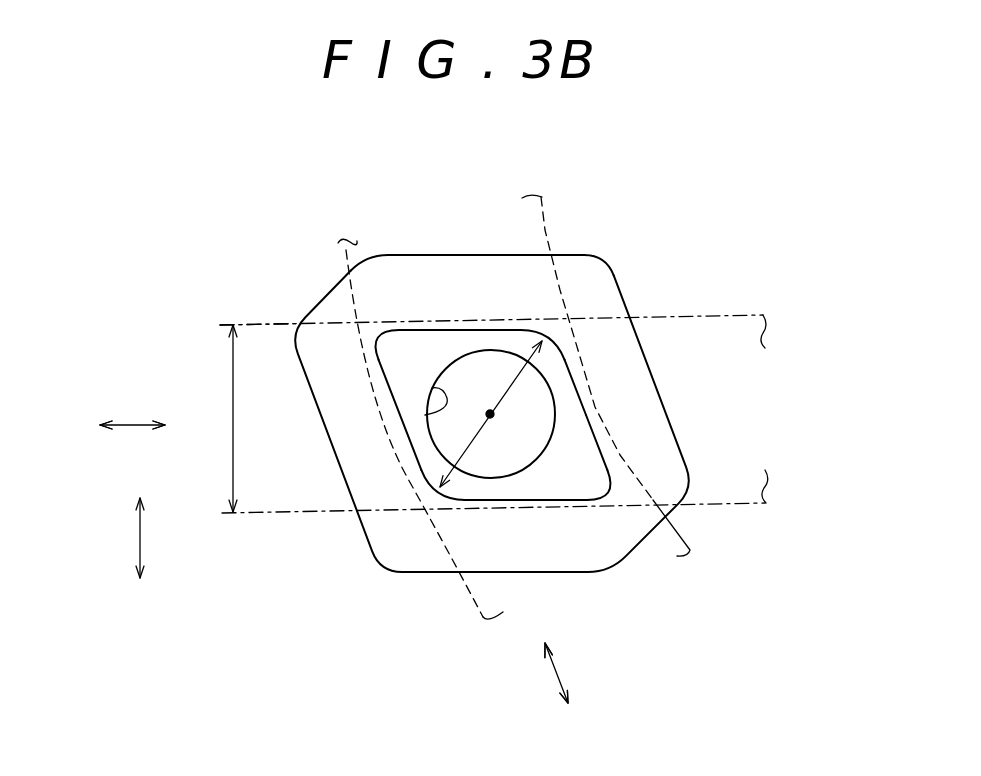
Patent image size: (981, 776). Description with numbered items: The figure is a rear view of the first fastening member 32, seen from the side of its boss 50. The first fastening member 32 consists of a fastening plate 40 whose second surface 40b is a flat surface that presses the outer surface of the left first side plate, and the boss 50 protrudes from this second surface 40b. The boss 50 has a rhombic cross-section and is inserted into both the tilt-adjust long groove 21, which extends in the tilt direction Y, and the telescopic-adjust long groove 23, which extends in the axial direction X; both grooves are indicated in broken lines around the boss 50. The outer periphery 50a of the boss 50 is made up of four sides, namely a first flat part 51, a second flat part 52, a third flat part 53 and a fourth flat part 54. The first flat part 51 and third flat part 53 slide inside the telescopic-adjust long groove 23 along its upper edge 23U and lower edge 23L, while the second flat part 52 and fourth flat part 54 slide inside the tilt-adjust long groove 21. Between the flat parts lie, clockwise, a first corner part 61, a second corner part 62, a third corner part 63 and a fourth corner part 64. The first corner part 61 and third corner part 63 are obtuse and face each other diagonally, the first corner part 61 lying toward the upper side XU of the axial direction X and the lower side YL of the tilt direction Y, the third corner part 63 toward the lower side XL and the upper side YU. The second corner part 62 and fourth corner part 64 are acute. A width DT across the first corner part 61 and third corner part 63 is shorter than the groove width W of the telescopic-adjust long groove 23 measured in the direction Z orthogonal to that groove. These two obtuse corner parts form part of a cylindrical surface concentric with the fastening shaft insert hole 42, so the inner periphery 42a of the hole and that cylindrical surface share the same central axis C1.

The tilt-adjust long groove 21 is at (541, 222).
The first fastening member 32 is at (563, 217).
The fastening plate 40 is at (492, 379).
The second surface 40b is at (597, 258).
The telescopic-adjust long groove 23 is at (270, 330).
The upper edge of the telescopic-adjust long groove 23U is at (730, 316).
The lower edge of the telescopic-adjust long groove 23L is at (728, 492).
The fastening shaft insert hole 42 is at (471, 356).
The inner periphery 42a is at (425, 415).
The boss 50 is at (515, 417).
The outer periphery 50a is at (597, 436).
The first flat part 51 is at (487, 499).
The second flat part 52 is at (408, 440).
The third flat part 53 is at (481, 327).
The fourth flat part 54 is at (575, 382).
The first corner part 61 is at (430, 483).
The second corner part 62 is at (383, 345).
The third corner part 63 is at (560, 348).
The fourth corner part 64 is at (592, 483).
The central axis C1 is at (490, 415).
The width across the first and third corner parts DT is at (500, 400).
The groove width W is at (233, 368).
The axial direction X is at (130, 428).
The upper side in the axial direction XU is at (86, 423).
The lower side in the axial direction XL is at (177, 423).
The tilt direction Y is at (556, 672).
The upper side in the tilt direction YU is at (545, 635).
The lower side in the tilt direction YL is at (575, 712).
The direction orthogonal to the longitudinal direction of the telescopic-adjust long Z is at (142, 540).